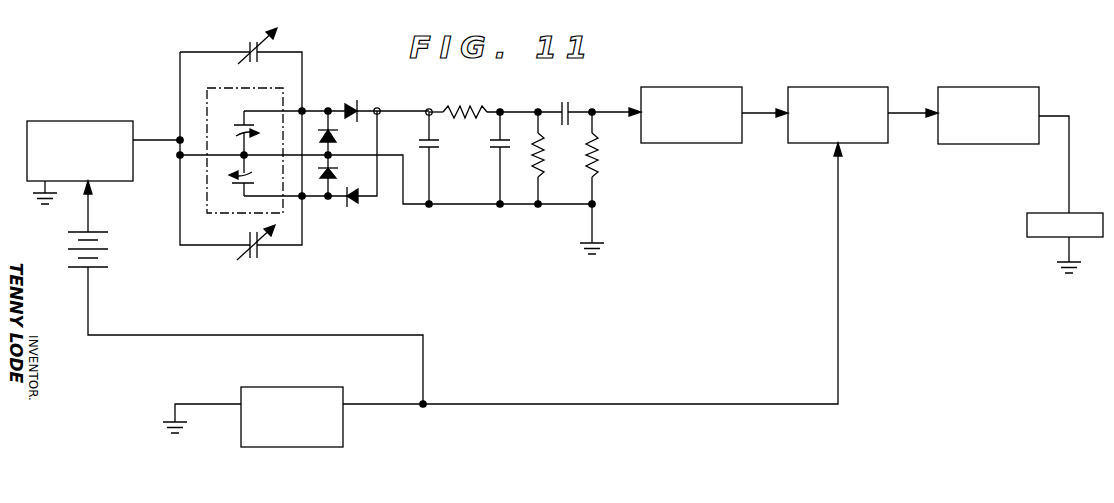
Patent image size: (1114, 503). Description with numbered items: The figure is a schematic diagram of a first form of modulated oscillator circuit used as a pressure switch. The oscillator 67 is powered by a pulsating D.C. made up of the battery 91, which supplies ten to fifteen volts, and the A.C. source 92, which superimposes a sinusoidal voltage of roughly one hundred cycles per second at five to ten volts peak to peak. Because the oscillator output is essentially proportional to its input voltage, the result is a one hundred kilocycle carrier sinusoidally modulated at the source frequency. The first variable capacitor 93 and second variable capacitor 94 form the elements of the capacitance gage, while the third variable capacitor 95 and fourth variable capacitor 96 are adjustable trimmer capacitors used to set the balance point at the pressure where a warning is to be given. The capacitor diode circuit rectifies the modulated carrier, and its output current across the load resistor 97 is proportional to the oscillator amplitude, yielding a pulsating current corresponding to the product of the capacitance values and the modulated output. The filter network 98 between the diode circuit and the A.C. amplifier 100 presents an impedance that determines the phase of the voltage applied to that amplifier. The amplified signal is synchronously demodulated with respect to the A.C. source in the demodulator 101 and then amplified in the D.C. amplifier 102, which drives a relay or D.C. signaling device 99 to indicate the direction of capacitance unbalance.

The oscillator 67 is at (82, 121).
The battery 91 is at (91, 268).
The A.C. source 92 is at (343, 396).
The first variable capacitor 93 is at (240, 123).
The second variable capacitor 94 is at (250, 170).
The third variable capacitor 95 is at (253, 45).
The fourth variable capacitor 96 is at (262, 246).
The load resistor 97 is at (598, 176).
The filter network 98 is at (587, 98).
The D.C. signaling device 99 is at (1027, 222).
The A.C. amplifier 100 is at (704, 87).
The demodulator 101 is at (862, 87).
The D.C. amplifier 102 is at (1017, 87).